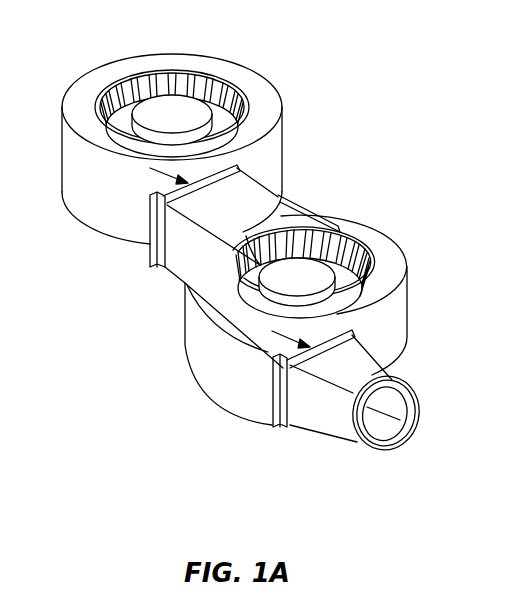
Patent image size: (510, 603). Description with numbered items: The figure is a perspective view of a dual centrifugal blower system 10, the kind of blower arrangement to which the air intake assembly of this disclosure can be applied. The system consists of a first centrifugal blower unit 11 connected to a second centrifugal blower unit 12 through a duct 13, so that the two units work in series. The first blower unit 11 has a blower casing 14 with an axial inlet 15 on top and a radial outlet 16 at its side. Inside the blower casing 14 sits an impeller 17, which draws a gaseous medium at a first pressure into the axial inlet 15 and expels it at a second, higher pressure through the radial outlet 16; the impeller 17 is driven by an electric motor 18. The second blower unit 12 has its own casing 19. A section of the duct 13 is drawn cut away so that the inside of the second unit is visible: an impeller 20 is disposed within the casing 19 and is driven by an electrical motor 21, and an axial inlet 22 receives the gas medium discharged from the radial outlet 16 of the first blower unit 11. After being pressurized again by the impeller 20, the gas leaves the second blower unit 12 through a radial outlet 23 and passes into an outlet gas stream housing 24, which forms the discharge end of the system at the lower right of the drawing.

The dual centrifugal blower system 10 is at (369, 116).
The first centrifugal blower unit 11 is at (190, 137).
The second centrifugal blower unit 12 is at (351, 282).
The duct 13 is at (214, 231).
The blower casing 14 is at (105, 207).
The axial inlet 15 is at (107, 87).
The radial outlet 16 is at (150, 261).
The impeller 17 is at (230, 84).
The electric motor 18 is at (178, 106).
The casing 19 is at (228, 363).
The impeller 20 is at (322, 229).
The electrical motor 21 is at (313, 271).
The axial inlet 22 is at (345, 293).
The radial outlet 23 is at (277, 427).
The outlet gas stream housing 24 is at (337, 427).